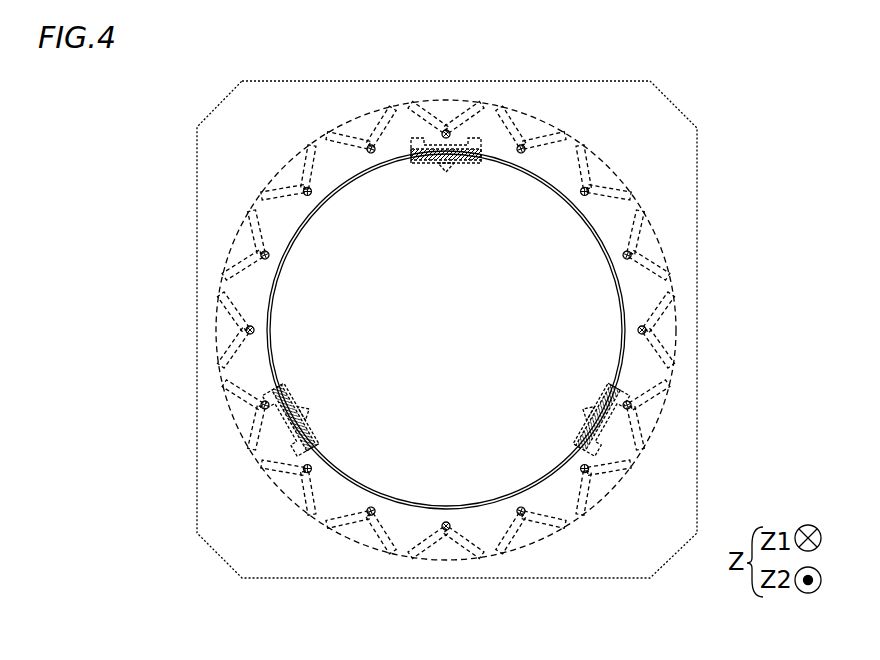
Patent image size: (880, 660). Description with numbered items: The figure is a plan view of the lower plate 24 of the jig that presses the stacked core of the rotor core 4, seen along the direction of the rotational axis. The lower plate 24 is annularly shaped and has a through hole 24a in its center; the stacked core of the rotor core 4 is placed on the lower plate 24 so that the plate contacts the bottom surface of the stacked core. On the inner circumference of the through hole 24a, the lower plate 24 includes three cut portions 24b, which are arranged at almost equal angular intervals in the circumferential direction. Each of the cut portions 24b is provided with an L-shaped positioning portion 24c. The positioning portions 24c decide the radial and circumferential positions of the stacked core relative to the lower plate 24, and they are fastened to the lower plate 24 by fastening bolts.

The rotor core 4 is at (603, 153).
The lower plate 24 is at (197, 140).
The through hole 24a is at (352, 187).
The cut portions 24b is at (425, 140).
The positioning portions 24c is at (472, 158).